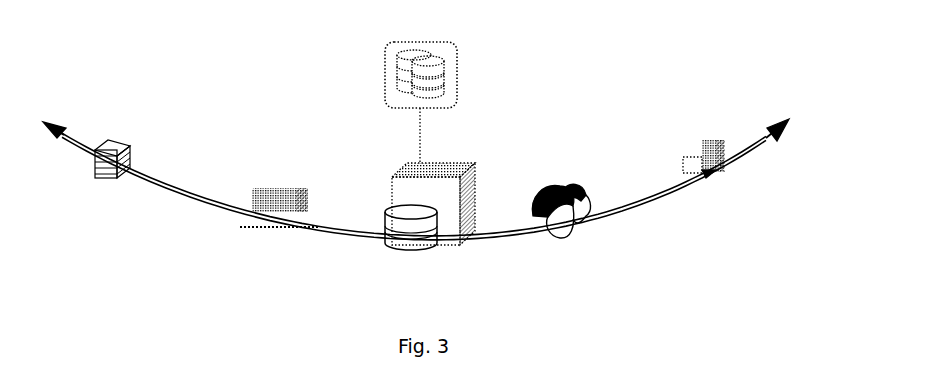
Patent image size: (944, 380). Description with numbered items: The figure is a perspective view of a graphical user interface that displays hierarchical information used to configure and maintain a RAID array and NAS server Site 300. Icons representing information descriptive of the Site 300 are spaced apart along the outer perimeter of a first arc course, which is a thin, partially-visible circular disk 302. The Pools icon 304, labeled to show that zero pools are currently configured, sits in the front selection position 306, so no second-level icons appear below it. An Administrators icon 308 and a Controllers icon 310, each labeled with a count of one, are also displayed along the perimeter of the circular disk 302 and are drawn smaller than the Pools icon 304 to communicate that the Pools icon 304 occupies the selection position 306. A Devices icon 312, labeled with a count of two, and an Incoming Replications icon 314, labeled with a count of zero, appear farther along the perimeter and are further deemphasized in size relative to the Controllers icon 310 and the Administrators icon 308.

The RAID array and NAS server Site 300 is at (493, 80).
The circular disk 302 is at (452, 166).
The Pools[0] icon 304 is at (474, 177).
The selection position 306 is at (445, 229).
The Administrators[1] icon 308 is at (591, 212).
The Controllers[1] icon 310 is at (299, 195).
The Devices[2] icon 312 is at (149, 152).
The Incoming Replications[0] icon 314 is at (743, 147).